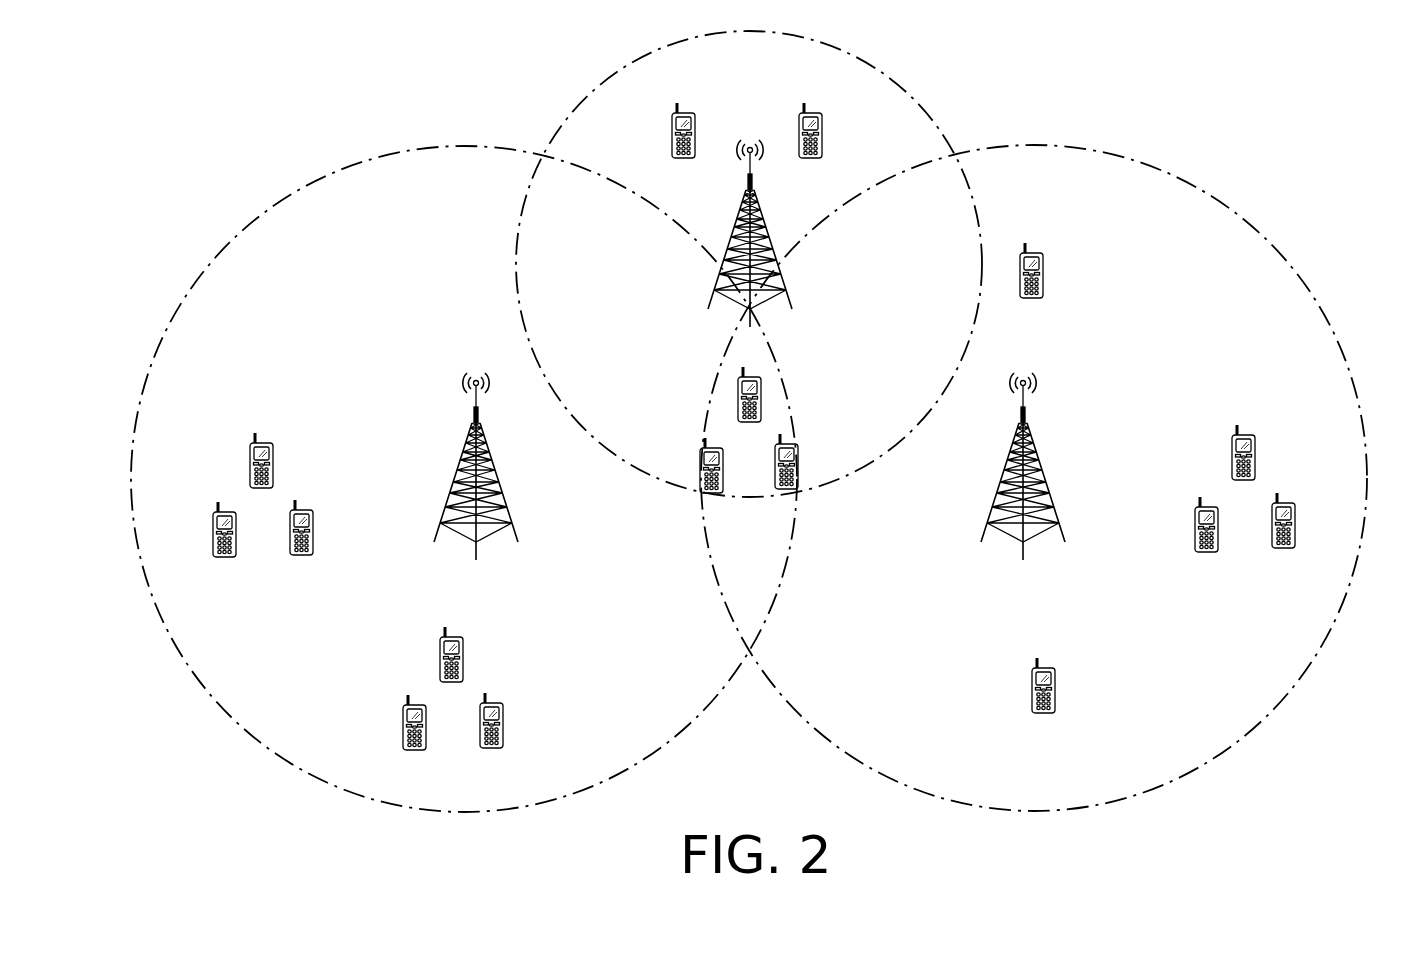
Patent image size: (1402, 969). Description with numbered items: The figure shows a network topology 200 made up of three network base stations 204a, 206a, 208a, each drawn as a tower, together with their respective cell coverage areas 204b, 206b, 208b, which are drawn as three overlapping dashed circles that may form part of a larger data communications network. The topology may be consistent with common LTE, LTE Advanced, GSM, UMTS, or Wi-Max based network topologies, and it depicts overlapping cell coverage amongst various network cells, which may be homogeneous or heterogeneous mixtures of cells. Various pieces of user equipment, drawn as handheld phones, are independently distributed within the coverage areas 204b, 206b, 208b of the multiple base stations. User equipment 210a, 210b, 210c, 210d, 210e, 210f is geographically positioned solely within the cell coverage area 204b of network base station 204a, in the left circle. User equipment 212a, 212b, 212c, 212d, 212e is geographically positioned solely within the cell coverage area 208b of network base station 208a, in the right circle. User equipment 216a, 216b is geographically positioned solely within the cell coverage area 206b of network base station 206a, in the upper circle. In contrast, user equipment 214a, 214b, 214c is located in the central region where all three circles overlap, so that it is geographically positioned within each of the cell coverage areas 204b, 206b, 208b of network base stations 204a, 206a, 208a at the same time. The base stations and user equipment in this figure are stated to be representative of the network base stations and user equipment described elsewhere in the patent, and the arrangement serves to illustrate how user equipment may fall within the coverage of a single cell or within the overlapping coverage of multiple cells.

The network topology 200 is at (330, 88).
The network base station 204a is at (456, 472).
The coverage area 204b is at (220, 252).
The network base station 206a is at (733, 232).
The coverage area 206b is at (610, 73).
The network base station 208a is at (1044, 478).
The coverage area 208b is at (1277, 251).
The user equipment 210a is at (415, 750).
The user equipment 210b is at (440, 652).
The user equipment 210c is at (503, 726).
The user equipment 210d is at (225, 557).
The user equipment 210e is at (250, 462).
The user equipment 210f is at (313, 530).
The user equipment 212a is at (1055, 700).
The user equipment 212b is at (1206, 550).
The user equipment 212c is at (1232, 455).
The user equipment 212d is at (1290, 503).
The user equipment 212e is at (1043, 272).
The user equipment 214a is at (700, 460).
The user equipment 214b is at (761, 392).
The user equipment 214c is at (798, 470).
The user equipment 216a is at (672, 128).
The user equipment 216b is at (822, 130).